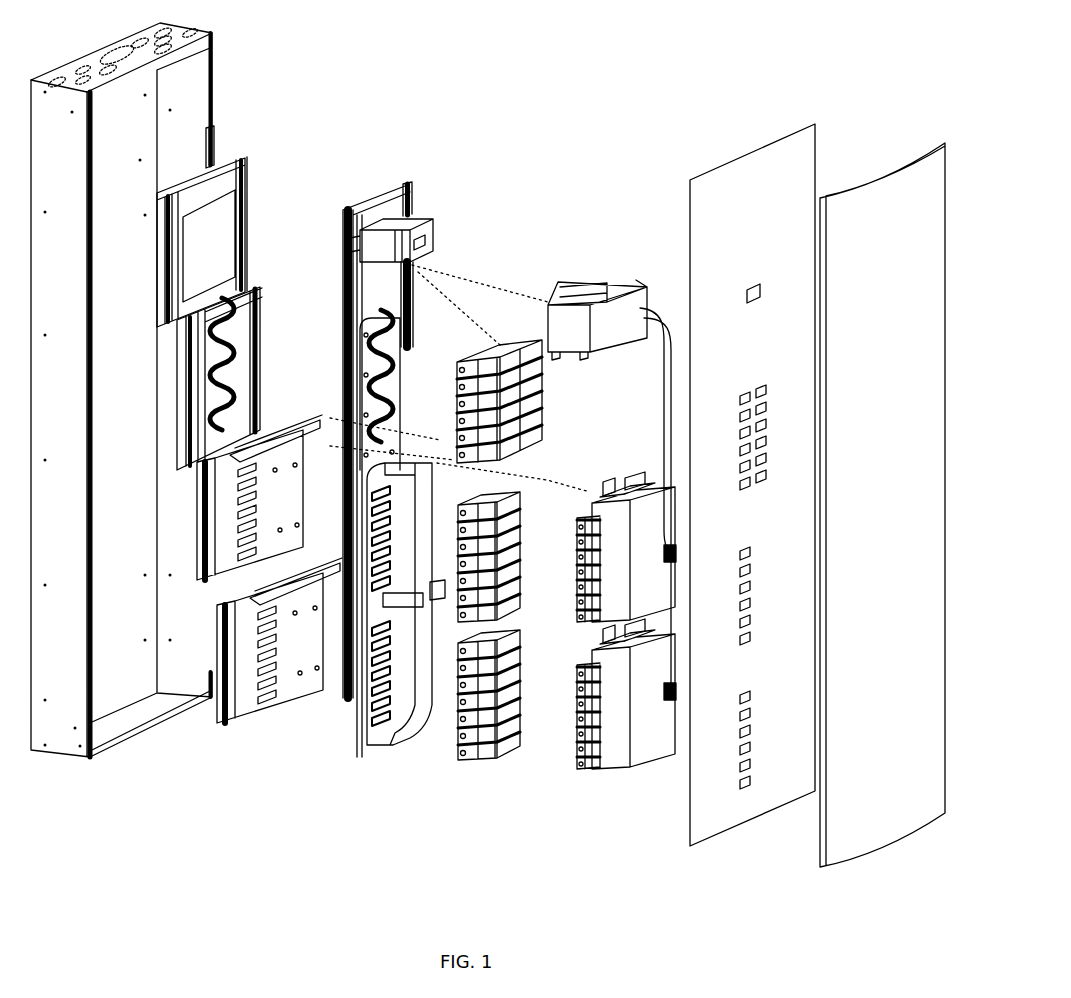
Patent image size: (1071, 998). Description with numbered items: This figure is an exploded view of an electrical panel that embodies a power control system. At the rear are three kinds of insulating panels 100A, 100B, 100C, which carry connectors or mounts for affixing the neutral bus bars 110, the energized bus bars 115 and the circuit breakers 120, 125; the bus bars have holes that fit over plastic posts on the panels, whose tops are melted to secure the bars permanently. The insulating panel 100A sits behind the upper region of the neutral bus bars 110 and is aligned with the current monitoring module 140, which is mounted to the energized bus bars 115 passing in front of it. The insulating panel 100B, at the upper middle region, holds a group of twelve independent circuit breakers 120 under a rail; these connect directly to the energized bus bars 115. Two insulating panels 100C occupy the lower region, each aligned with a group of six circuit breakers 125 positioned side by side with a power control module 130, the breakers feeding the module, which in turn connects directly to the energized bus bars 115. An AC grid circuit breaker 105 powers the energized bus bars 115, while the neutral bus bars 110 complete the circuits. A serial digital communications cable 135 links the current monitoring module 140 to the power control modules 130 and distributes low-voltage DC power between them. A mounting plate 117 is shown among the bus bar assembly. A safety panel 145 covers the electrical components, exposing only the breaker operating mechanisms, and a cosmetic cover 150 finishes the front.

The insulating panel 100A is at (247, 157).
The insulating panel 100B is at (260, 287).
The insulating panel 100C is at (270, 423).
The AC grid circuit breaker 105 is at (430, 222).
The neutral bus bars 110 is at (345, 215).
The energized bus bars 115 is at (362, 318).
The mounting plate 117 is at (382, 727).
The circuit breakers 120 is at (497, 343).
The circuit breakers 125 is at (517, 505).
The power control module 130 is at (647, 484).
The serial digital communications cable 135 is at (655, 422).
The current monitoring module 140 is at (600, 285).
The safety panel 145 is at (690, 222).
The cosmetic cover 150 is at (887, 170).